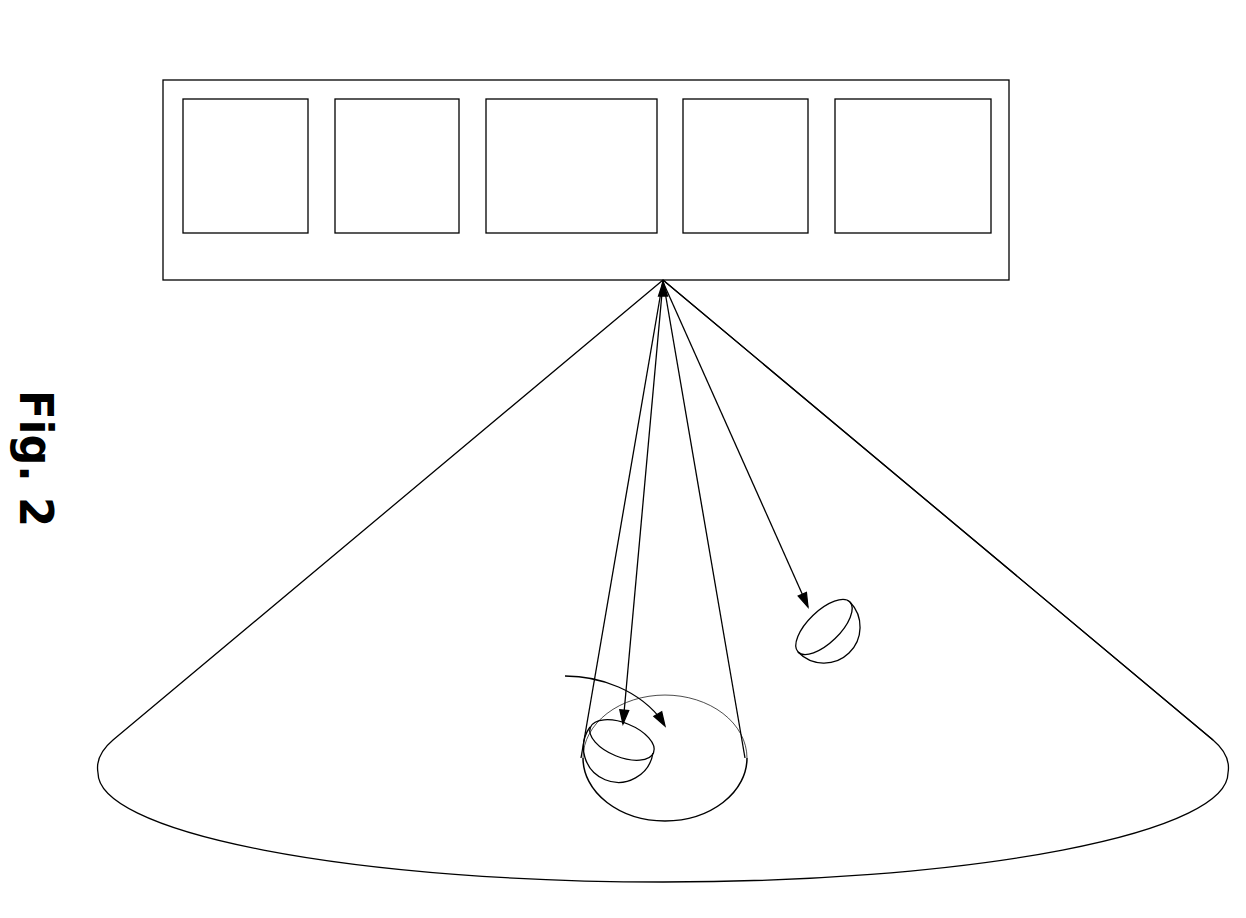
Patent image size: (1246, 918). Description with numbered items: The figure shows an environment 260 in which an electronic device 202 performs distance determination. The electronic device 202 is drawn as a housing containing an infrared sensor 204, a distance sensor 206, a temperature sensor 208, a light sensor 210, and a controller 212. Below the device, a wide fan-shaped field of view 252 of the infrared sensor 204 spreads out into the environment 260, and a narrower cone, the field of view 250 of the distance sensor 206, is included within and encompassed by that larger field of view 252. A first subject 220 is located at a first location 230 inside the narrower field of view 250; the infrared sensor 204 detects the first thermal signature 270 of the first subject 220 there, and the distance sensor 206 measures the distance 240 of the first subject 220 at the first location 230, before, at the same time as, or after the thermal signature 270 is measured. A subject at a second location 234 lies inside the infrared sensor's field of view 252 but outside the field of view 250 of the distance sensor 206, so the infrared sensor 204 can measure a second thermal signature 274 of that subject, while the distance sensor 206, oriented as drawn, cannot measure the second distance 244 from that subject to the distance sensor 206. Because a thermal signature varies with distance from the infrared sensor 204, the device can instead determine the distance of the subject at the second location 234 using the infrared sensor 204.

The electronic device 202 is at (958, 78).
The infrared sensor 204 is at (253, 99).
The distance sensor 206 is at (403, 99).
The temperature sensor 208 is at (569, 99).
The light sensor 210 is at (751, 99).
The controller 212 is at (918, 99).
The first subject 220 is at (583, 789).
The first location 230 is at (619, 791).
The second location 234 is at (858, 622).
The distance 240 is at (638, 532).
The second distance 244 is at (745, 460).
The field of view of the distance sensor 250 is at (596, 697).
The field of view of the infrared sensor 252 is at (1075, 683).
The environment 260 is at (230, 607).
The first thermal signature 270 is at (583, 789).
The second thermal signature 274 is at (849, 598).